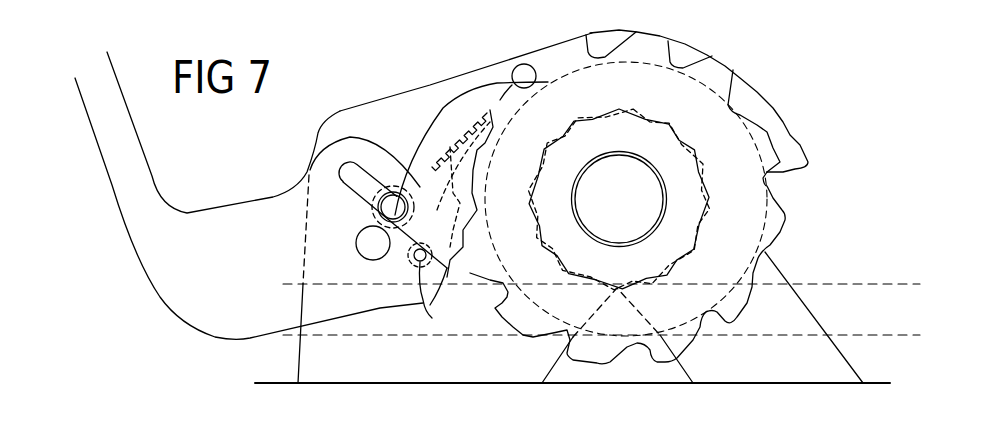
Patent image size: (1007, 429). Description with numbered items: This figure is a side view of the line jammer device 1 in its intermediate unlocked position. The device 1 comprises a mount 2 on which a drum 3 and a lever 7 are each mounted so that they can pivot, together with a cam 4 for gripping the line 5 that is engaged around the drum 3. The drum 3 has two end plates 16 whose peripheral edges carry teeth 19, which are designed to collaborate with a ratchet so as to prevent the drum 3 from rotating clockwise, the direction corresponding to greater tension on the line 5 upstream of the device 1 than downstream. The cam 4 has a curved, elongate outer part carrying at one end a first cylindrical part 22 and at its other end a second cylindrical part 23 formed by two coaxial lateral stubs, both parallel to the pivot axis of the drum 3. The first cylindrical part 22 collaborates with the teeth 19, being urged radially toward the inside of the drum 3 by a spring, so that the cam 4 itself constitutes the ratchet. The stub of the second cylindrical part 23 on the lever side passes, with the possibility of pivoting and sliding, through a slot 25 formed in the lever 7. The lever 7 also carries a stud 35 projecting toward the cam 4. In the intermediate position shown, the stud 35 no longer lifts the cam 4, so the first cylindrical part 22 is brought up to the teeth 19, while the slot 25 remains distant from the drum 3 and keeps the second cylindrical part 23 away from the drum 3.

The line jammer device 1 is at (352, 101).
The mount 2 is at (294, 358).
The drum 3 is at (759, 108).
The cam 4 is at (437, 110).
The line 5 is at (828, 302).
The lever 7 is at (163, 172).
The end plates 16 is at (713, 85).
The teeth 19 is at (538, 63).
The first cylindrical part 22 is at (523, 75).
The second cylindrical part 23 is at (393, 207).
The slot 25 is at (353, 173).
The stud 35 is at (424, 292).